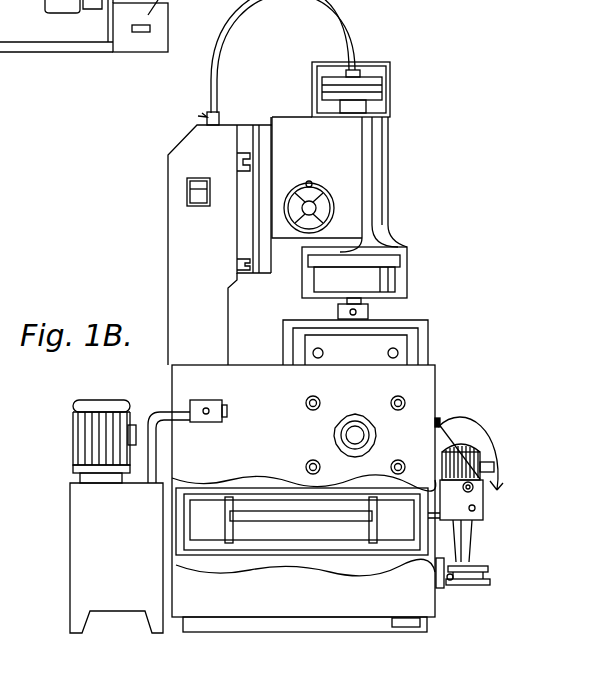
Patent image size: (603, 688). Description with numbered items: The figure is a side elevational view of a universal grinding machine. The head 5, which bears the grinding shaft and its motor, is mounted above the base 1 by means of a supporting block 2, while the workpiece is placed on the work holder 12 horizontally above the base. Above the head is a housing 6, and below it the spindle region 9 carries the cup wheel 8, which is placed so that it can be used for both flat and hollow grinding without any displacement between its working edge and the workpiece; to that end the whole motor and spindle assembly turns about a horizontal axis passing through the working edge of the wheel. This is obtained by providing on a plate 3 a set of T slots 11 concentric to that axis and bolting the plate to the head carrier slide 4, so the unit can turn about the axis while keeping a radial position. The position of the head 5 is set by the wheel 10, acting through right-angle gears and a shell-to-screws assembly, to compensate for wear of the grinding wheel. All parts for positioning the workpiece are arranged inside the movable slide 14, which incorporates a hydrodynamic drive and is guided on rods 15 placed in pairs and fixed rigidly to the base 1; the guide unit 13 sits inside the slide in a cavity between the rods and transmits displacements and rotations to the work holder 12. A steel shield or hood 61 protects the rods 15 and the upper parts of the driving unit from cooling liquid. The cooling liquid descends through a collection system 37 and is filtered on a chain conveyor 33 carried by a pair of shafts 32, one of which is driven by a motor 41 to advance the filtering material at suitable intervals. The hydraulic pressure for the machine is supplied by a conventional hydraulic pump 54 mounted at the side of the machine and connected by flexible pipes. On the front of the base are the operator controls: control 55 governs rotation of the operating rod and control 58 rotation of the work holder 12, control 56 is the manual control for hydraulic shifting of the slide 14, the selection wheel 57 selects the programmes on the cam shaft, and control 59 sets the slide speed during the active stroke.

The base 1 is at (210, 378).
The supporting block 2 is at (183, 290).
The plate 3 is at (245, 125).
The head carrier slide 4 is at (268, 125).
The head 5 is at (367, 170).
The drive motor housing 6 is at (370, 80).
The cup wheel 8 is at (392, 275).
The spindle housing 9 is at (388, 251).
The wheel 10 is at (336, 222).
The T slots 11 is at (243, 163).
The work holder 12 is at (363, 299).
The guide unit 13 is at (368, 313).
The movable slide 14 is at (395, 343).
The rods 15 is at (313, 353).
The shafts 32 is at (204, 510).
The chain conveyor 33 is at (248, 497).
The collection system 37 is at (465, 555).
The motor 41 is at (455, 498).
The hydraulic pump 54 is at (77, 505).
The control for rotation of rod 55 is at (318, 400).
The manual control for hydraulic shifting of slide 56 is at (398, 396).
The selection wheel 57 is at (336, 432).
The control for rotation of work holder 58 is at (307, 462).
The speed control 59 is at (400, 460).
The steel shield or hood 61 is at (288, 320).